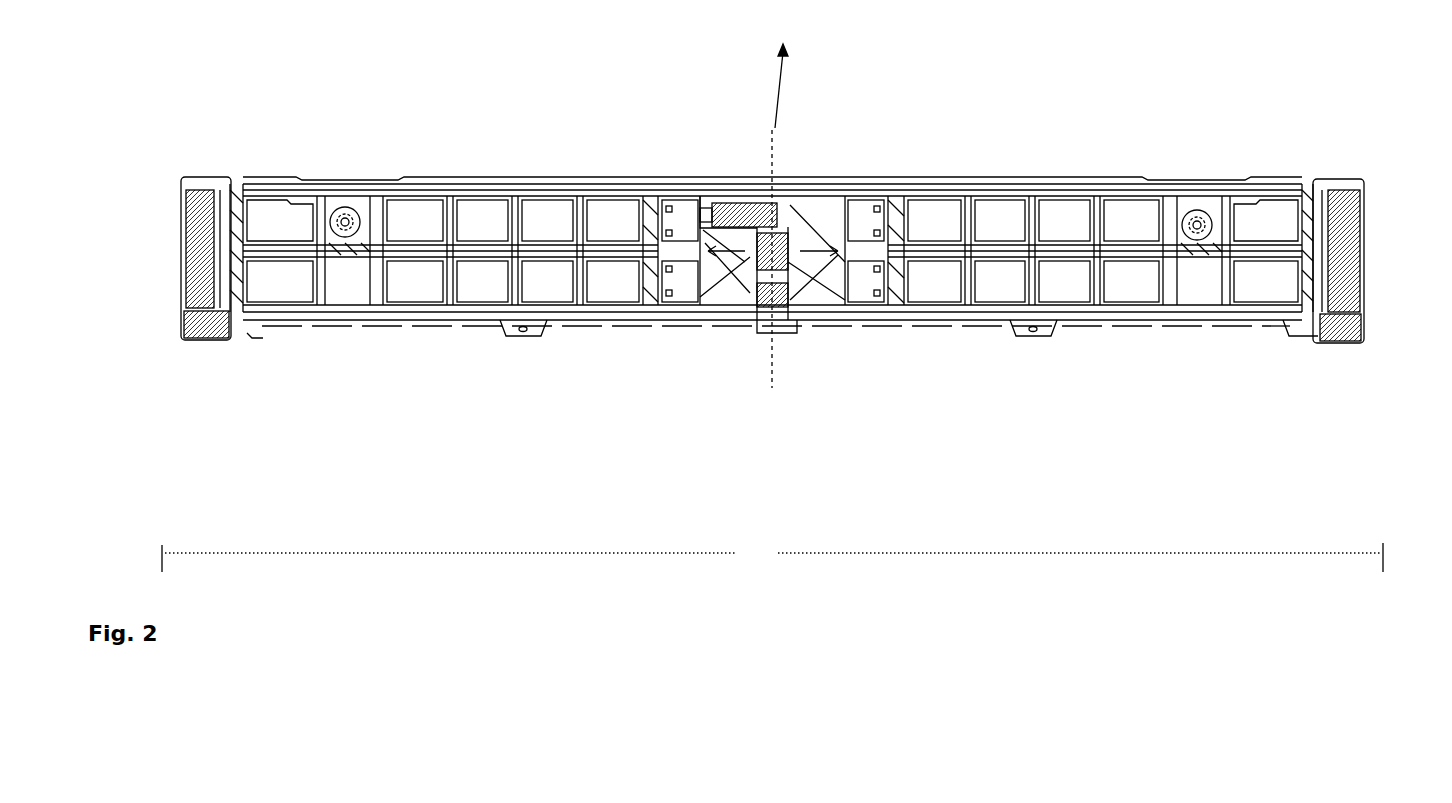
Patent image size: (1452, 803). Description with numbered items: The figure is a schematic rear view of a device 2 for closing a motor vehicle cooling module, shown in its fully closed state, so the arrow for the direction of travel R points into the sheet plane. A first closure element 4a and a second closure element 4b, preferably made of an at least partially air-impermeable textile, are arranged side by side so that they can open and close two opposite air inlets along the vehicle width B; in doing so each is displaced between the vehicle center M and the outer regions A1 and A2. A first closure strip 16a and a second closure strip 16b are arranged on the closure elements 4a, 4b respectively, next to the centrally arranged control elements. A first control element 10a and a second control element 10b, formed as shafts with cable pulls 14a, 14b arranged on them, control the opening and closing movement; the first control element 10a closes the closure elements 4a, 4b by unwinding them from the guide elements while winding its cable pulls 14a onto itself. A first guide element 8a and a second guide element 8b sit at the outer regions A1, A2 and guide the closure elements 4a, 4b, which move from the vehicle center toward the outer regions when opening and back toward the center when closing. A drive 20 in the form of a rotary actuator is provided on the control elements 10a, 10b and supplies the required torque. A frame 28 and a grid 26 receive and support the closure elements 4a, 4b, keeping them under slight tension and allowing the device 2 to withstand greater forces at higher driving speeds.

The device 2 is at (1225, 446).
The first closure element 4a is at (497, 287).
The second closure element 4b is at (1073, 210).
The first guide element 8a is at (186, 250).
The second guide element 8b is at (1347, 226).
The first control element 10a is at (780, 223).
The second control element 10b is at (203, 328).
The cable pulls of the first control element 14a is at (740, 270).
The cable pulls of the second control element 14b is at (893, 302).
The first closure strip 16a is at (893, 203).
The second closure strip 16b is at (680, 203).
The drive 20 is at (740, 210).
The grid 26 is at (1032, 283).
The frame 28 is at (424, 180).
The outer region A1 is at (222, 140).
The outer region A2 is at (1337, 140).
The direction of travel R is at (778, 88).
The vehicle center M is at (770, 275).
The vehicle width B is at (772, 557).